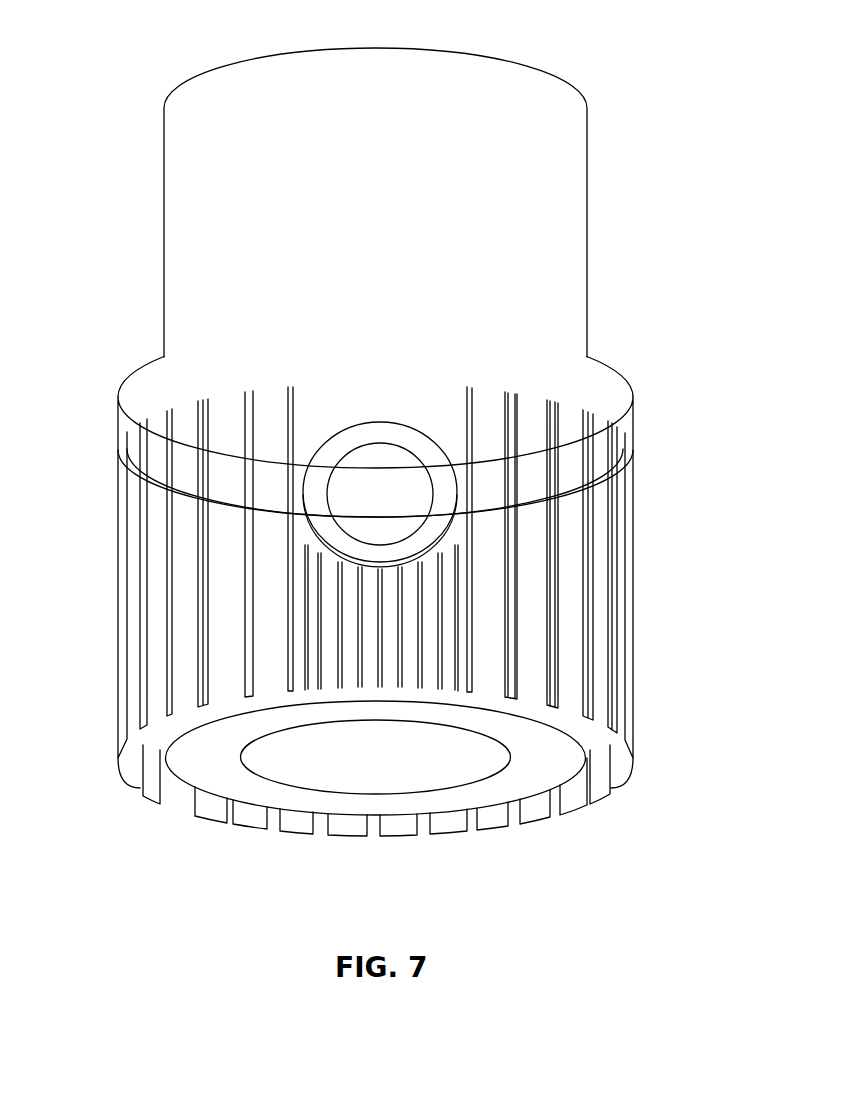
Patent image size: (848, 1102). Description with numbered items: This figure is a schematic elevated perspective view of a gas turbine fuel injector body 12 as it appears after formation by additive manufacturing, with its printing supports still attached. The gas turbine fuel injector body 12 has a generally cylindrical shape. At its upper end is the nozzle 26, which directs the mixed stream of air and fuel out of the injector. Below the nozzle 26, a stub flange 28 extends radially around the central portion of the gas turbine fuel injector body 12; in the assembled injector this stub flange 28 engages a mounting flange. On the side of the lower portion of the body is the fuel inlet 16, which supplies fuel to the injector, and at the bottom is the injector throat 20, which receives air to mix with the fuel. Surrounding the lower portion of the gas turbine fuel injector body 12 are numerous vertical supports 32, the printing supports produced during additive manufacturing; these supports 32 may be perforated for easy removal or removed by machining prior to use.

The gas turbine fuel injector body 12 is at (606, 115).
The nozzle 26 is at (548, 241).
The stub flange 28 is at (575, 381).
The supports 32 is at (531, 613).
The fuel inlet 16 is at (335, 447).
The injector throat 20 is at (346, 758).